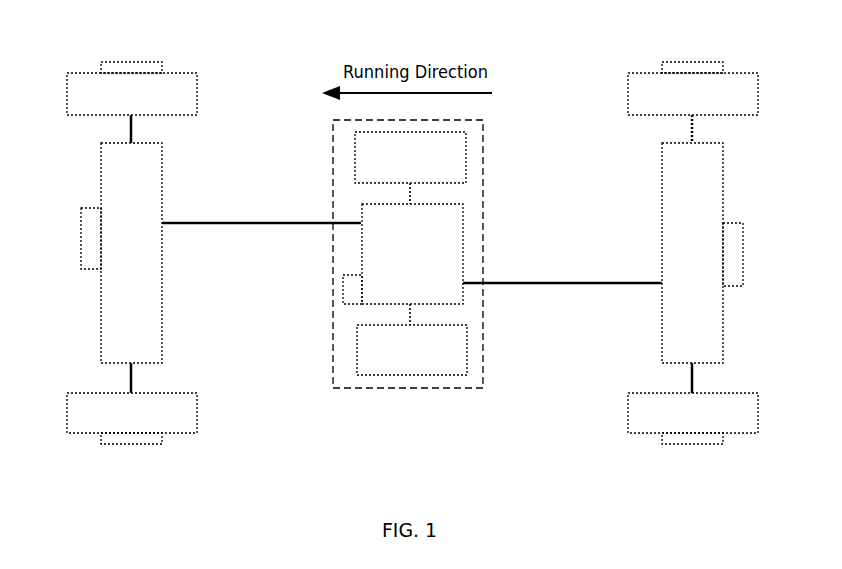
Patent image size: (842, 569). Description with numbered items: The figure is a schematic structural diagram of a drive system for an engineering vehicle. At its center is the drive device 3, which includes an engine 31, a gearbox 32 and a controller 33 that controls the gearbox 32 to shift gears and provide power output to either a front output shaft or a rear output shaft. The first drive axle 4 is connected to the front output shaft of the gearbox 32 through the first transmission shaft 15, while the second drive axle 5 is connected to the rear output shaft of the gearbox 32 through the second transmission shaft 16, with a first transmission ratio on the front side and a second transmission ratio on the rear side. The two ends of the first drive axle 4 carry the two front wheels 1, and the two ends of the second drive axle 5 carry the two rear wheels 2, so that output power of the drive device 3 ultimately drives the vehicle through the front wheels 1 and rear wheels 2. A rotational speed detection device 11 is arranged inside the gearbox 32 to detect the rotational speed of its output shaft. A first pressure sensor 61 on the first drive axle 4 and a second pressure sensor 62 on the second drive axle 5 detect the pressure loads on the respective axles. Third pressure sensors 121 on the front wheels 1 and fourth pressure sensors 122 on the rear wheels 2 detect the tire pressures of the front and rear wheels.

The front wheels 1 is at (132, 253).
The rear wheels 2 is at (693, 253).
The drive device 3 is at (416, 254).
The first drive axle 4 is at (131, 254).
The second drive axle 5 is at (692, 254).
The rotational speed detection device 11 is at (348, 286).
The first transmission shaft 15 is at (261, 210).
The second transmission shaft 16 is at (562, 271).
The engine 31 is at (412, 350).
The gearbox 32 is at (412, 254).
The controller 33 is at (410, 157).
The first pressure sensor 61 is at (88, 240).
The second pressure sensor 62 is at (733, 255).
The third pressure sensors 121 is at (131, 68).
The fourth pressure sensors 122 is at (692, 68).